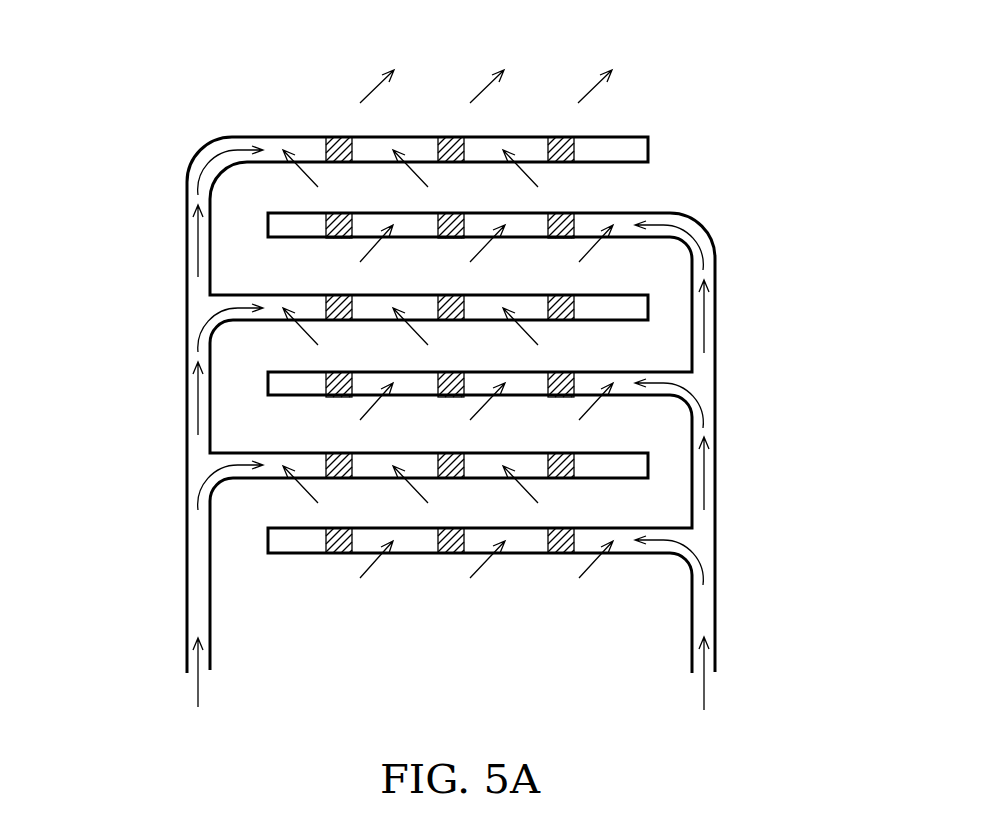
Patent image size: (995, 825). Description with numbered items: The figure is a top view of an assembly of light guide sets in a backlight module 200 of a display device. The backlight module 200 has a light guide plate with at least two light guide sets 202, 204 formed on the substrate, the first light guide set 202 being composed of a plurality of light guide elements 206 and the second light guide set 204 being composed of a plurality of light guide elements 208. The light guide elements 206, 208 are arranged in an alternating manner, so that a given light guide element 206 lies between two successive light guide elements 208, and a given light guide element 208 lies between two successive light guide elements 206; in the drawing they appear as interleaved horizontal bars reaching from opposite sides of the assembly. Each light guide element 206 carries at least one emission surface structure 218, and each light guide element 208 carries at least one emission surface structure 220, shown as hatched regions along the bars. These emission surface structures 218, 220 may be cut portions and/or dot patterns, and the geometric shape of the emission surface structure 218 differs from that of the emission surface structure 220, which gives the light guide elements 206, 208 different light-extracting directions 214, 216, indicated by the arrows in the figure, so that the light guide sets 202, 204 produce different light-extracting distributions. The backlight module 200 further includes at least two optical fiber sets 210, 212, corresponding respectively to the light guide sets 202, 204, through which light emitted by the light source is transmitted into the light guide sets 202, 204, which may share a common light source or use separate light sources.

The backlight module 200 is at (141, 141).
The light guide set 202 is at (177, 378).
The light guide set 204 is at (727, 378).
The light guide element 206 is at (635, 148).
The light guide element 208 is at (300, 232).
The optical fiber set 210 is at (195, 570).
The optical fiber set 212 is at (708, 568).
The light-extracting direction 214 is at (365, 87).
The light-extracting direction 216 is at (530, 176).
The emission surface structure 218 is at (328, 137).
The emission surface structure 220 is at (338, 238).